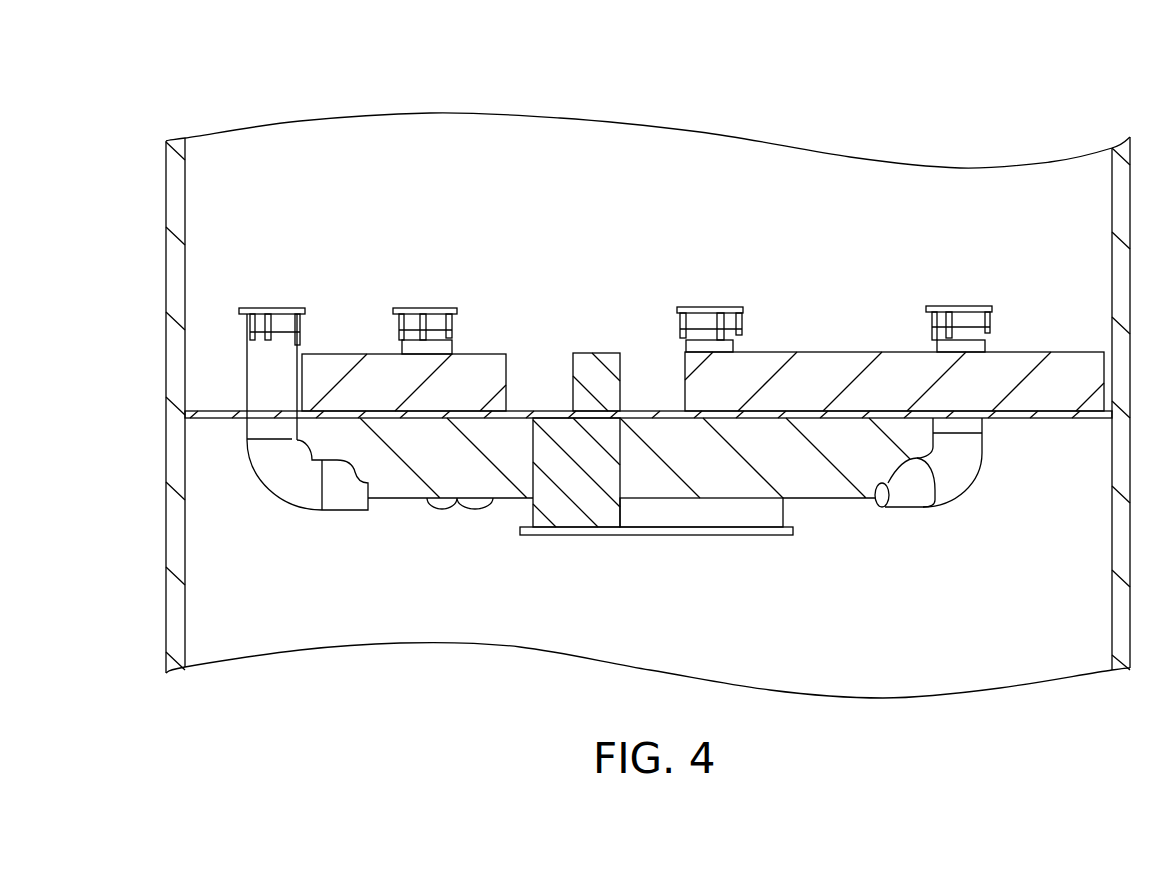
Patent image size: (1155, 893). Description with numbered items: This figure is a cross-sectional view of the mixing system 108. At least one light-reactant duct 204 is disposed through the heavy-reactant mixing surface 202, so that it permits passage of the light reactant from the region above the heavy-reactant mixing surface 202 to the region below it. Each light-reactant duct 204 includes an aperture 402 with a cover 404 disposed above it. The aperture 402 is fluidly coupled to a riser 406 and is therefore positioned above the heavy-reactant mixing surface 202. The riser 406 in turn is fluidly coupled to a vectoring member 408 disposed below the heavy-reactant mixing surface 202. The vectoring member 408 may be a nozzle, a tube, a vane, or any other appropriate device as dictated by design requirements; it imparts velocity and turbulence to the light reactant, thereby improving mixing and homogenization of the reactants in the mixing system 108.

The mixing system 108 is at (1106, 75).
The heavy-reactant mixing surface 202 is at (528, 412).
The light-reactant duct 204 is at (287, 348).
The aperture 402 is at (287, 320).
The cover 404 is at (254, 312).
The riser 406 is at (238, 337).
The vectoring member 408 is at (302, 500).